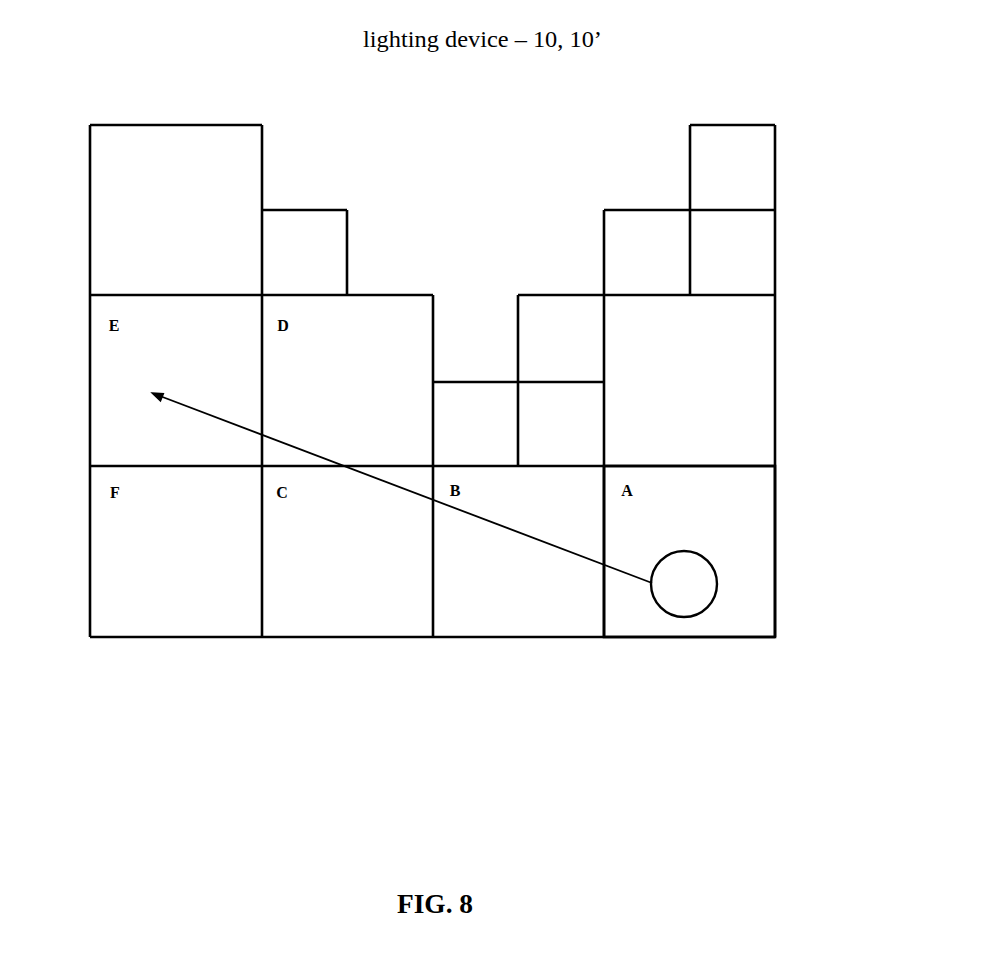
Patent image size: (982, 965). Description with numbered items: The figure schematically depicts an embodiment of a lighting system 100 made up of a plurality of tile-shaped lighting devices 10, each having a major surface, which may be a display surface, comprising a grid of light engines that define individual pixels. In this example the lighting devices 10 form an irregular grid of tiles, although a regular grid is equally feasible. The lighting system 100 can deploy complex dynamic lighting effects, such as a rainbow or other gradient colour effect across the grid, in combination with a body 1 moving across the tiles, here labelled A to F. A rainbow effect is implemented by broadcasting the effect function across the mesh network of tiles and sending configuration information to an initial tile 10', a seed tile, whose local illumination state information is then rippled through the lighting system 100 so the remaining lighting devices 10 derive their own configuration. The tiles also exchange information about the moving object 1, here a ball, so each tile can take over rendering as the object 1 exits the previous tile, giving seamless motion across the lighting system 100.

The tile-shaped lighting device 10 is at (430, 413).
The initial tile 10' is at (689, 581).
The moving object 1 is at (700, 598).
The lighting system 100 is at (430, 449).